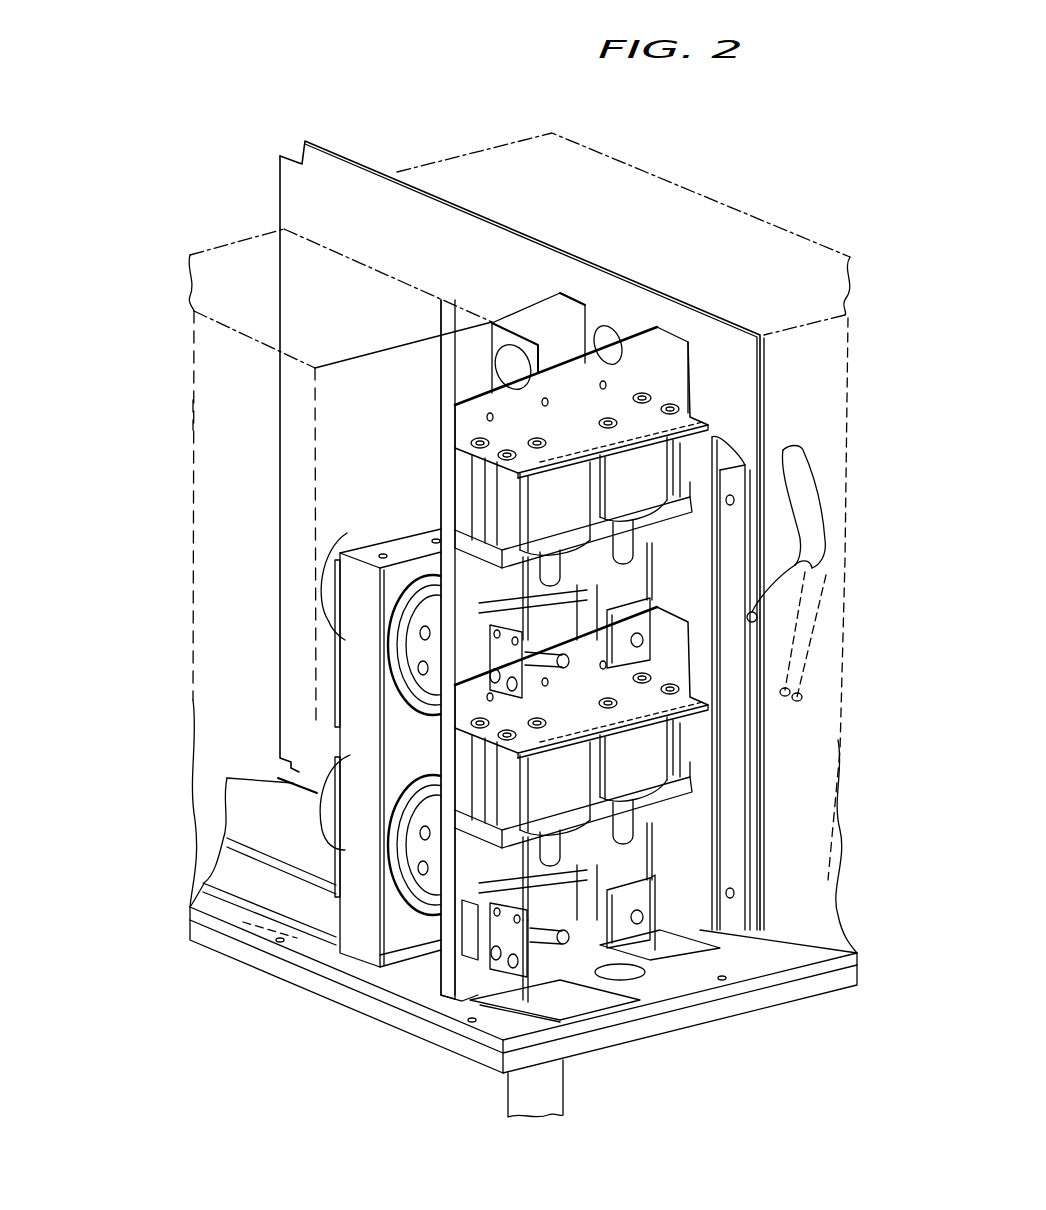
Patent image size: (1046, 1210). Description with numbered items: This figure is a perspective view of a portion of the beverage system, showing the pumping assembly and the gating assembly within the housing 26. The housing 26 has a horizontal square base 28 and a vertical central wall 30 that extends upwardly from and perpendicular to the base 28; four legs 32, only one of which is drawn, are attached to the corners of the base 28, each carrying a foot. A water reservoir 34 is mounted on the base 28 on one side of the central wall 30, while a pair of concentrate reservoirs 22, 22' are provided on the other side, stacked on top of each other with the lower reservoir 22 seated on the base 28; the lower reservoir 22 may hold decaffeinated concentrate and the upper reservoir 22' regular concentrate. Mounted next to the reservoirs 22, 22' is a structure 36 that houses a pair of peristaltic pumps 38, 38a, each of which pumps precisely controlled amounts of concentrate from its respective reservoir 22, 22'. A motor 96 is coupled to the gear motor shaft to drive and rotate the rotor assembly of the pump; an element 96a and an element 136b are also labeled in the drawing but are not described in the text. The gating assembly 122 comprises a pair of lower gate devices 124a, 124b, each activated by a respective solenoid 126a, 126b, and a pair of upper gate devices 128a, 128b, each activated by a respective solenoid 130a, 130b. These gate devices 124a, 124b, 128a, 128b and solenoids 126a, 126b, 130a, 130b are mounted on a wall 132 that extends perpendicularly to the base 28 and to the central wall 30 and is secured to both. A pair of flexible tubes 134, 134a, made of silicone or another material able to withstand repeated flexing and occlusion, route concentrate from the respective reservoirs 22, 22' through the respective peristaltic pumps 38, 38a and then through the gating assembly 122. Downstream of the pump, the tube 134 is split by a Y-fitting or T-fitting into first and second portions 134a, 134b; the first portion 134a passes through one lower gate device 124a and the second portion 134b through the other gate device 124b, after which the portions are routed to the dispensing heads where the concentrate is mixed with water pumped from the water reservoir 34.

The lower concentrate reservoir 22 is at (292, 587).
The upper concentrate reservoir 22' is at (144, 441).
The housing 26 is at (353, 137).
The base 28 is at (660, 992).
The central wall 30 is at (366, 212).
The leg 32 is at (513, 1100).
The water reservoir 34 is at (745, 253).
The structure 36 is at (407, 548).
The peristaltic pump 38 is at (395, 848).
The peristaltic pump 38a is at (408, 700).
The motor 96 is at (318, 762).
The upper drive coupling 96a is at (347, 533).
The gating assembly 122 is at (477, 957).
The lower gate device 124a is at (530, 943).
The lower gate device 124b is at (637, 927).
The solenoid 126a is at (553, 793).
The solenoid 126b is at (622, 762).
The upper gate device 128a is at (655, 715).
The upper gate device 128b is at (650, 640).
The solenoid 130a is at (555, 507).
The solenoid 130b is at (635, 468).
The wall 132 is at (463, 908).
The flexible tube 134 is at (400, 860).
The flexible tube 134a is at (565, 660).
The second tube portion 134b is at (650, 913).
The upper left clamp 136b is at (643, 707).